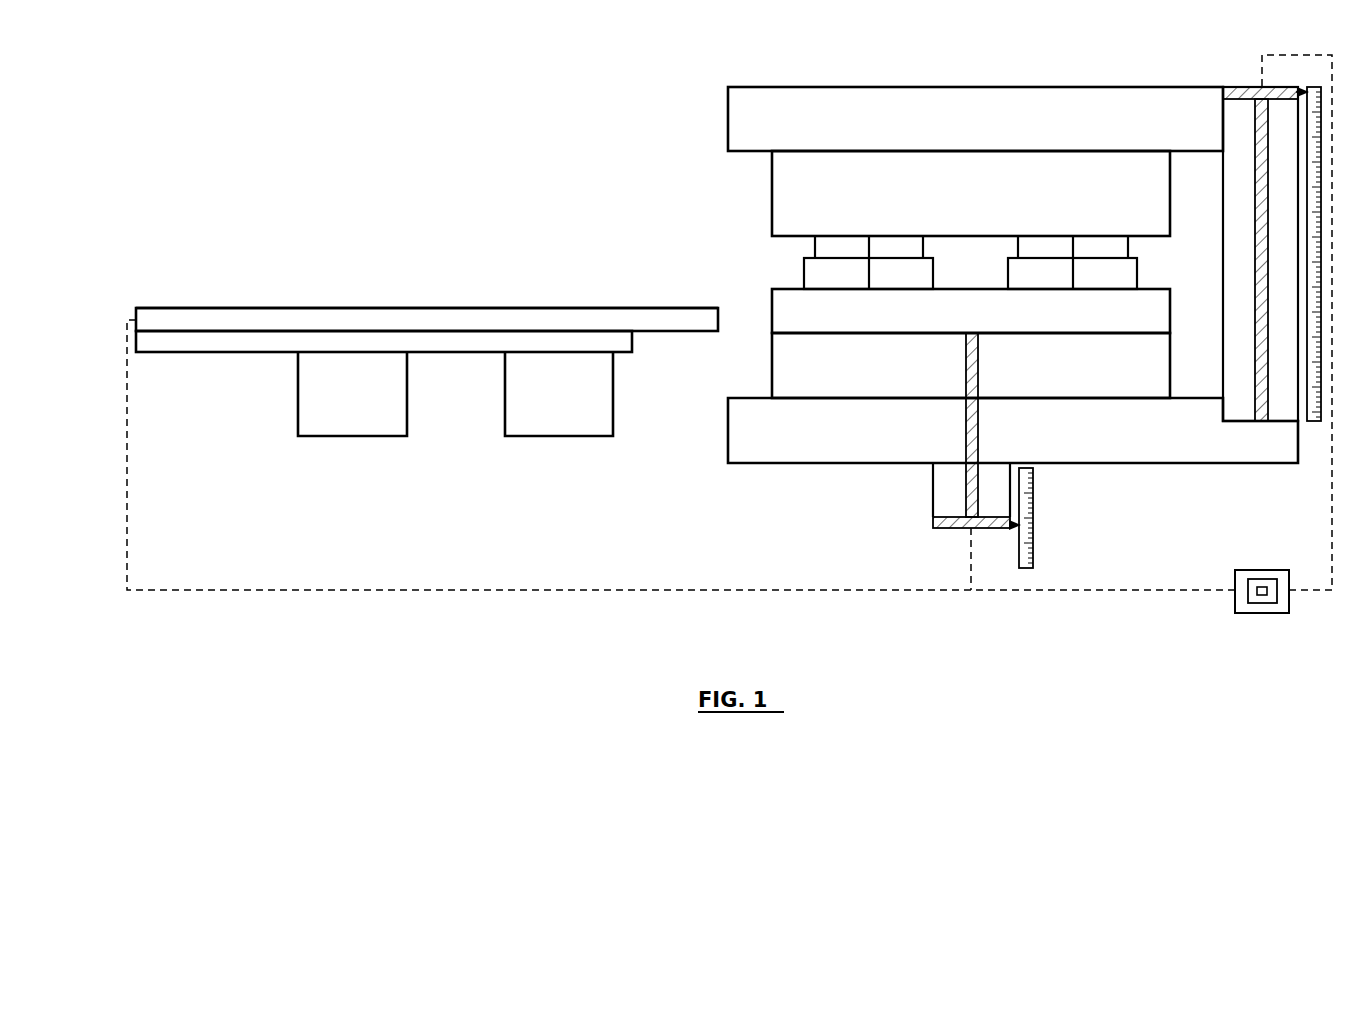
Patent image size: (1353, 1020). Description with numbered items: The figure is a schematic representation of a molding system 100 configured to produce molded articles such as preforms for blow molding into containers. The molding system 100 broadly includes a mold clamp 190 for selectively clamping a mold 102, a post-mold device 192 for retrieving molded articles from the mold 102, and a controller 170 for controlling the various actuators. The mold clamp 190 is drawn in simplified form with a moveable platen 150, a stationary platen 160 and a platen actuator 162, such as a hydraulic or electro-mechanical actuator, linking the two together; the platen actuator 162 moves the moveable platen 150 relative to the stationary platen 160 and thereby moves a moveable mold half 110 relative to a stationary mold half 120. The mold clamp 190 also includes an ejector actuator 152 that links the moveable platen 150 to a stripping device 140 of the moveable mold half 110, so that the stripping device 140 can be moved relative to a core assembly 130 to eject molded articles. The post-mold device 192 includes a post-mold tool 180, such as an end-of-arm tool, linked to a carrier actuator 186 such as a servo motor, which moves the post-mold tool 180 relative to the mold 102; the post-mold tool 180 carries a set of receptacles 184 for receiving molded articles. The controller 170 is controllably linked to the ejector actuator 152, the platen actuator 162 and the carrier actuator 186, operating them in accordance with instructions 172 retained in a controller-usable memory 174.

The molding system 100 is at (546, 188).
The mold 102 is at (660, 202).
The moveable mold half 110 is at (760, 263).
The stationary mold half 120 is at (760, 210).
The core assembly 130 is at (757, 361).
The stripping device 140 is at (757, 321).
The moveable platen 150 is at (780, 450).
The ejector actuator 152 is at (931, 494).
The stationary platen 160 is at (812, 100).
The platen actuator 162 is at (1232, 258).
The controller 170 is at (1240, 605).
The instructions 172 is at (1261, 587).
The controller-usable memory 174 is at (1263, 597).
The post-mold tool 180 is at (215, 378).
The receptacles 184 is at (340, 405).
The carrier actuator 186 is at (224, 308).
The mold clamp 190 is at (701, 459).
The post-mold device 192 is at (136, 272).